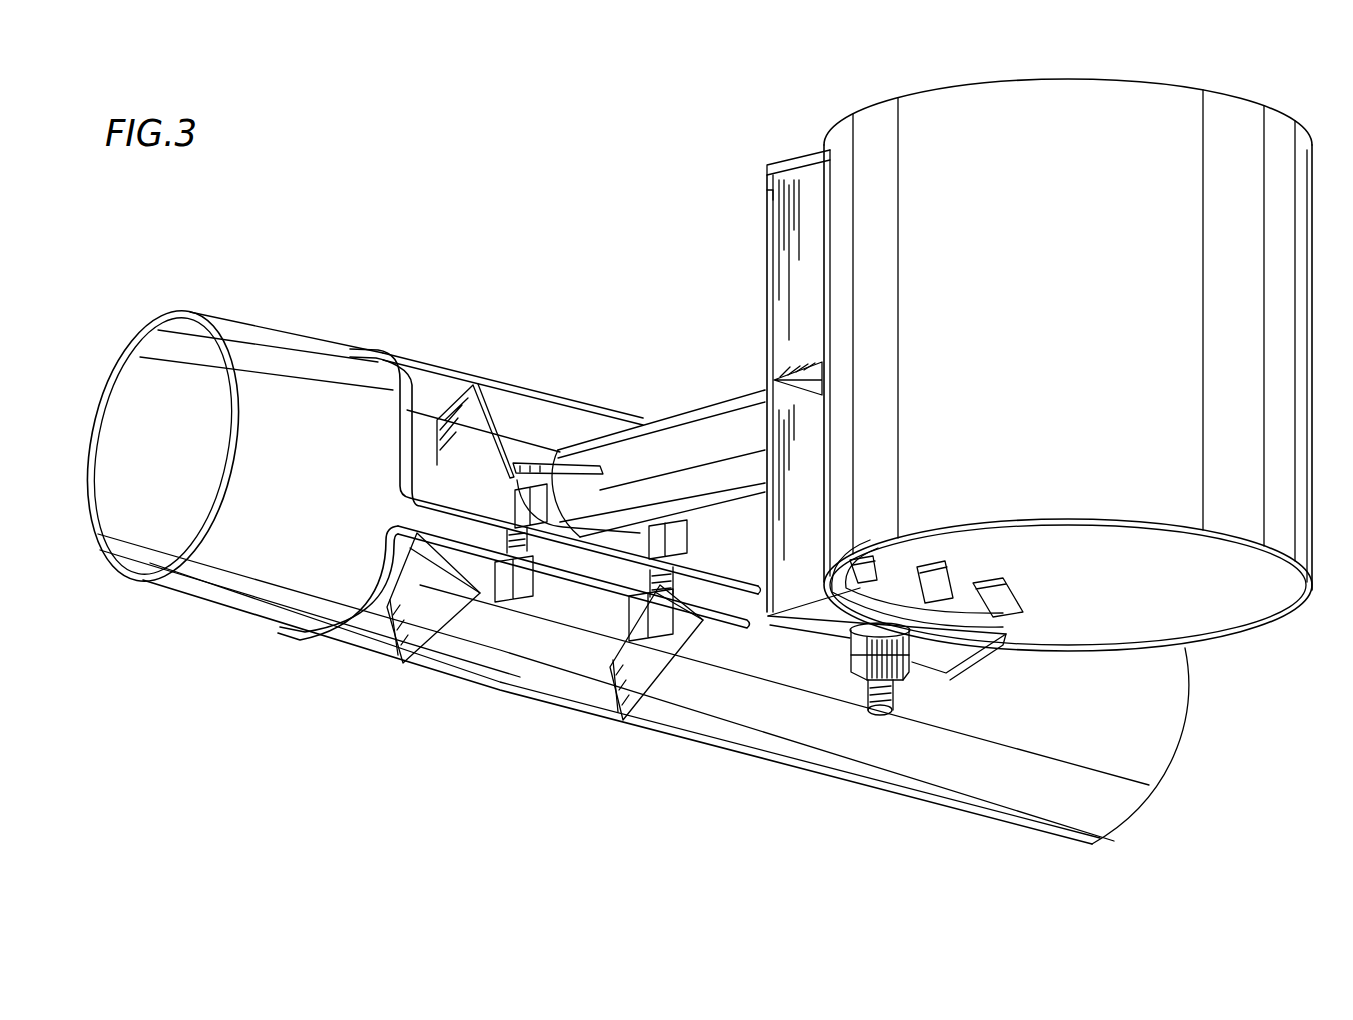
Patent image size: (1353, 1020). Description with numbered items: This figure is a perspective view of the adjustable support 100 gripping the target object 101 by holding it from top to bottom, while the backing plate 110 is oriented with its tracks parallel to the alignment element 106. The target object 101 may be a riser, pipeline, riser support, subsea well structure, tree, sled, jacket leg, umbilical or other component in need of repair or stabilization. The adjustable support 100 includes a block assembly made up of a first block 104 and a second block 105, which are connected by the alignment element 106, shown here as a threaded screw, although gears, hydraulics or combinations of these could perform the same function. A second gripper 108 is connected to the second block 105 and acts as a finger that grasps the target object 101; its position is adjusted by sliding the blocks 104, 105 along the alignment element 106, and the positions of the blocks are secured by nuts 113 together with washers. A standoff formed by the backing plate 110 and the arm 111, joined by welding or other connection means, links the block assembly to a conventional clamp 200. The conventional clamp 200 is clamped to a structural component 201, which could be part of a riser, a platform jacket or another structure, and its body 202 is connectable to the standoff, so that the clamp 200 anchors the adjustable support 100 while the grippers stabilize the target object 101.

The adjustable support 100 is at (1268, 634).
The target object 101 is at (876, 132).
The first block 104 is at (798, 220).
The second block 105 is at (800, 577).
The alignment element 106 is at (878, 713).
The second gripper 108 is at (948, 578).
The backing plate 110 is at (770, 292).
The arm 111 is at (716, 416).
The nuts 113 is at (905, 655).
The conventional clamp 200 is at (421, 346).
The structural component 201 is at (220, 598).
The body 202 is at (520, 405).